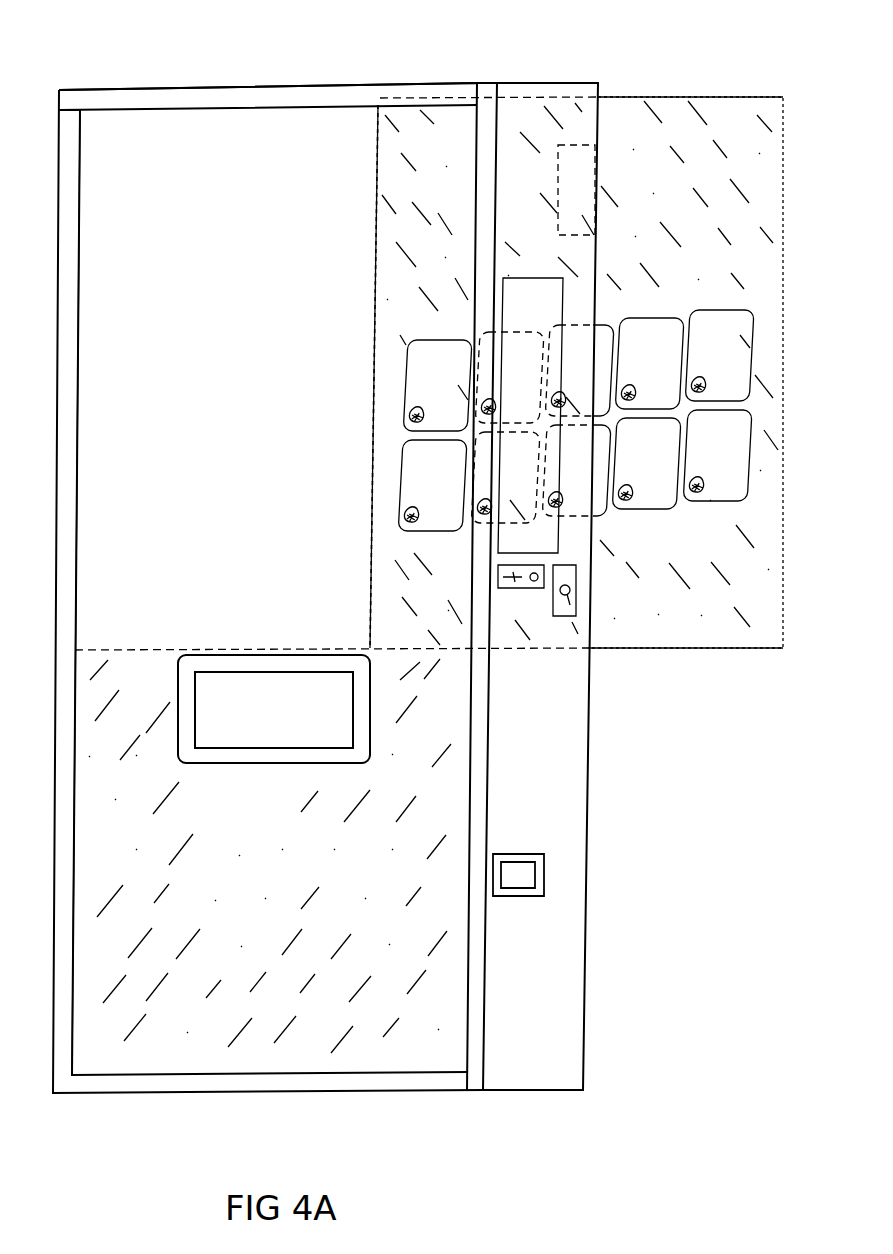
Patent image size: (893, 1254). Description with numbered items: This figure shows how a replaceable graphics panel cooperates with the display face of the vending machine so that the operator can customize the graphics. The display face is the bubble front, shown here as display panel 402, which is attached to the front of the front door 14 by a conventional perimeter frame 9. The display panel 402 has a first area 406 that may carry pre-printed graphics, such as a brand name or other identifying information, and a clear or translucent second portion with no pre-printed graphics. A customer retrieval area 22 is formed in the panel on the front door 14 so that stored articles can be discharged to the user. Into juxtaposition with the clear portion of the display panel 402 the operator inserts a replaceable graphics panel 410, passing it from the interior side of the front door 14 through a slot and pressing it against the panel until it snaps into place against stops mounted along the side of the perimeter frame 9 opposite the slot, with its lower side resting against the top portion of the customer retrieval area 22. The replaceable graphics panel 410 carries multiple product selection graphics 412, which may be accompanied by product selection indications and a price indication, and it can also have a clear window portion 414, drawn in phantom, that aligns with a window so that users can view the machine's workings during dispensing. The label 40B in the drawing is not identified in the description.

The perimeter frame 9 is at (77, 96).
The display panel (bubble front) 402 is at (326, 76).
The front door 14 is at (557, 83).
The replaceable graphics panel 410 is at (682, 100).
The clear window portion 414 is at (558, 185).
The product selection graphics 412 is at (708, 310).
The door 40B is at (265, 366).
The customer retrieval area 22 is at (274, 709).
The first area 406 is at (262, 834).